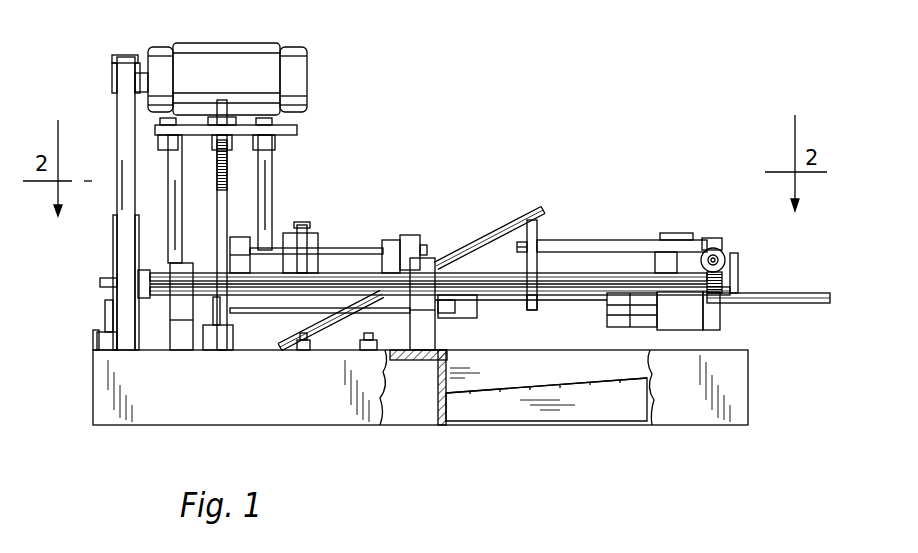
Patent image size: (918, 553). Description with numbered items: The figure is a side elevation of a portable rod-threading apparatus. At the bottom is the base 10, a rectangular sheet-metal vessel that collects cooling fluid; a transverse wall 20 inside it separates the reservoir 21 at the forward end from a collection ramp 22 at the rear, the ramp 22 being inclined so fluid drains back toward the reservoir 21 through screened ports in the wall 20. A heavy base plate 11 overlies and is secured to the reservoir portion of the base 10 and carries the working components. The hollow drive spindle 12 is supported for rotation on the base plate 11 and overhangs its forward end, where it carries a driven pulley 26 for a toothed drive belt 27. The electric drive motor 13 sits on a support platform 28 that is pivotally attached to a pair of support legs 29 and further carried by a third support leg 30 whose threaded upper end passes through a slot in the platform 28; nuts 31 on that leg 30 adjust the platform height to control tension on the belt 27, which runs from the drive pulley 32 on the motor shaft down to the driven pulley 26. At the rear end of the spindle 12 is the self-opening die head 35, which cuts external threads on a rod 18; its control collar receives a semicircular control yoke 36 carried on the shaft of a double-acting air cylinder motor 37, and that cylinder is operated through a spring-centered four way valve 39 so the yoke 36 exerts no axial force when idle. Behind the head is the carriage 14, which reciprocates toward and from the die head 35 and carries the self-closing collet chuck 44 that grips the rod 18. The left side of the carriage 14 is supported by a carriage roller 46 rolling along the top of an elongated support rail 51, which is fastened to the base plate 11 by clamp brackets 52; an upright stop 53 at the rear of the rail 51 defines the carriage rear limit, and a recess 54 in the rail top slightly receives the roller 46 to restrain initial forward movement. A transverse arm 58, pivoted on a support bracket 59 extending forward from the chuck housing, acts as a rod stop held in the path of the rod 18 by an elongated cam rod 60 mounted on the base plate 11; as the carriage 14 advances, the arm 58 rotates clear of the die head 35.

The base 10 is at (690, 400).
The base plate 11 is at (425, 366).
The drive spindle 12 is at (214, 320).
The electric drive motor 13 is at (234, 82).
The carriage 14 is at (718, 236).
The rod 18 is at (802, 304).
The transverse wall 20 is at (450, 369).
The reservoir 21 is at (416, 416).
The collection ramp 22 is at (622, 382).
The driven pulley 26 is at (114, 240).
The toothed drive belt 27 is at (118, 133).
The support platform 28 is at (297, 130).
The support legs 29 is at (170, 192).
The third support leg 30 is at (223, 222).
The nuts 31 is at (230, 143).
The drive pulley 32 is at (113, 73).
The self-opening die head 35 is at (462, 300).
The control yoke 36 is at (422, 240).
The air cylinder motor 37 is at (298, 233).
The spring-centered four way valve 39 is at (266, 345).
The self-closing collet chuck 44 is at (614, 306).
The carriage roller 46 is at (724, 254).
The support rail 51 is at (517, 296).
The clamp brackets 52 is at (432, 268).
The upright stop 53 is at (738, 272).
The recess 54 is at (740, 285).
The transverse arm 58 is at (538, 232).
The support bracket 59 is at (640, 240).
The cam rod 60 is at (524, 216).